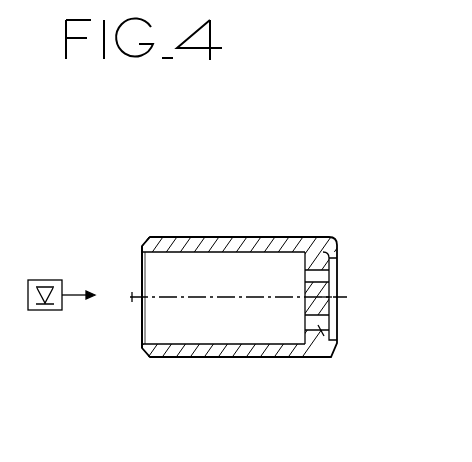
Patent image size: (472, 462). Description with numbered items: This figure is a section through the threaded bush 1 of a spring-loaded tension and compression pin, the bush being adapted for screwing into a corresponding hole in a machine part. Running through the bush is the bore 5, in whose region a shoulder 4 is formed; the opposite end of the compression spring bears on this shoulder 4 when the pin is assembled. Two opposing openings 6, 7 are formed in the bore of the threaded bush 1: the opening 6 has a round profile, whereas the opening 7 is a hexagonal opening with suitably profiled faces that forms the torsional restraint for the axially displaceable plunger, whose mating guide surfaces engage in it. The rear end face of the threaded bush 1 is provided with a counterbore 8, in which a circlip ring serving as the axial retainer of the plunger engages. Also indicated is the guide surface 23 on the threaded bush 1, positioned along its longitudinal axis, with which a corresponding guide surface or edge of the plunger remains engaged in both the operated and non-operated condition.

The threaded bush 1 is at (333, 243).
The shoulder 4 is at (291, 242).
The bore 5 is at (240, 278).
The opening 6 is at (141, 268).
The opening 7 is at (322, 297).
The counterbore 8 is at (336, 263).
The guide surface 23 is at (326, 342).